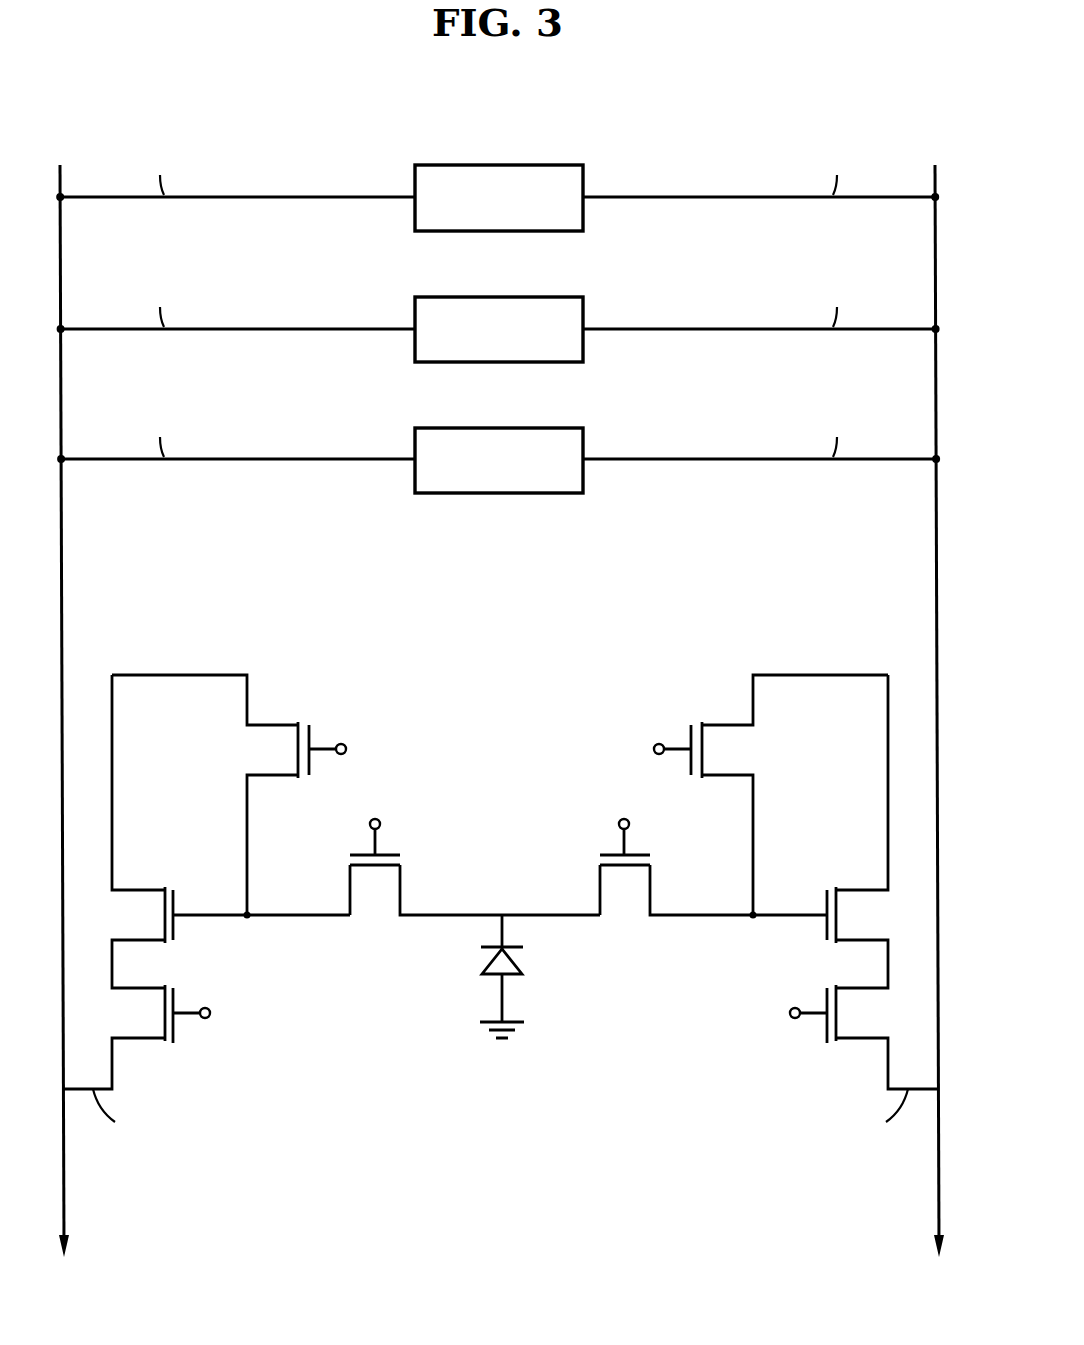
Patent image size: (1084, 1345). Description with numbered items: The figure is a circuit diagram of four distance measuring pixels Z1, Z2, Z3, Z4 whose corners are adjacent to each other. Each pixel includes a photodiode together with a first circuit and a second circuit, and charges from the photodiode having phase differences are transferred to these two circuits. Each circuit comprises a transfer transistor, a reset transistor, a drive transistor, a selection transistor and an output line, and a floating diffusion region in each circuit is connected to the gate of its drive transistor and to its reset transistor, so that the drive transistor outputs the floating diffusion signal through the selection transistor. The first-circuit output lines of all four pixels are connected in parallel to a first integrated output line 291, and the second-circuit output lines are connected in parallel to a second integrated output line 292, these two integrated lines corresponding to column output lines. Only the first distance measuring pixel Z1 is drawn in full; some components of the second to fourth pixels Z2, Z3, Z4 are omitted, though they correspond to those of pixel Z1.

The first integrated output line 291 is at (64, 1193).
The second integrated output line 292 is at (937, 1193).
The first distance measuring pixel Z1 is at (505, 708).
The second distance measuring pixel Z2 is at (497, 449).
The third distance measuring pixel Z3 is at (497, 318).
The fourth distance measuring pixel Z4 is at (497, 187).